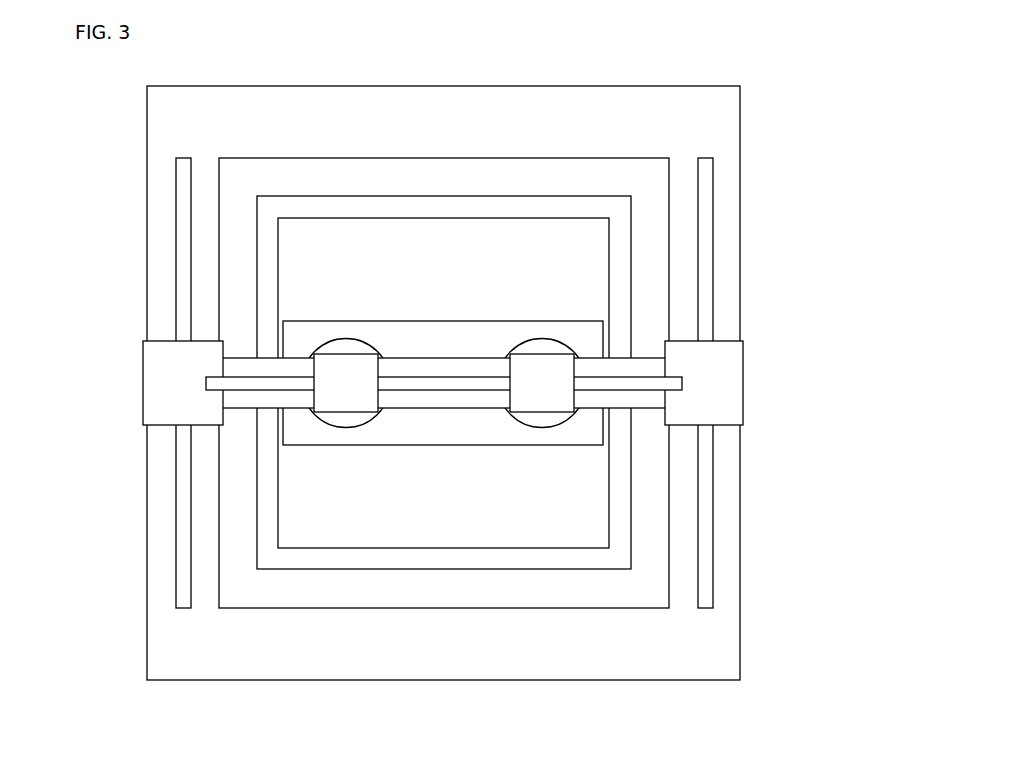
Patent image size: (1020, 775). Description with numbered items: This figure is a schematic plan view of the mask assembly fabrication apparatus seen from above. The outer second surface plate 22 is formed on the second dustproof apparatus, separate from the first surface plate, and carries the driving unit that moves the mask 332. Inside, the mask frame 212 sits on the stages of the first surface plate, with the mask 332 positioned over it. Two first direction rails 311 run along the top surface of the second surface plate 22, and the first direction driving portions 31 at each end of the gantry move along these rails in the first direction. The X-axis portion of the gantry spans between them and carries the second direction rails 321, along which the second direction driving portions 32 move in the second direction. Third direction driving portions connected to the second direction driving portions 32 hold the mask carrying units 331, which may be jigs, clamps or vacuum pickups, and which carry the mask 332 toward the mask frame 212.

The second surface plate 22 is at (577, 662).
The mask frame 212 is at (498, 532).
The mask 332 is at (393, 430).
The first direction rails 311 is at (703, 242).
The mask carrying units 331 is at (550, 348).
The first direction driving portions 31 is at (735, 386).
The second direction rails 321 is at (245, 383).
The second direction driving portions 32 is at (545, 393).